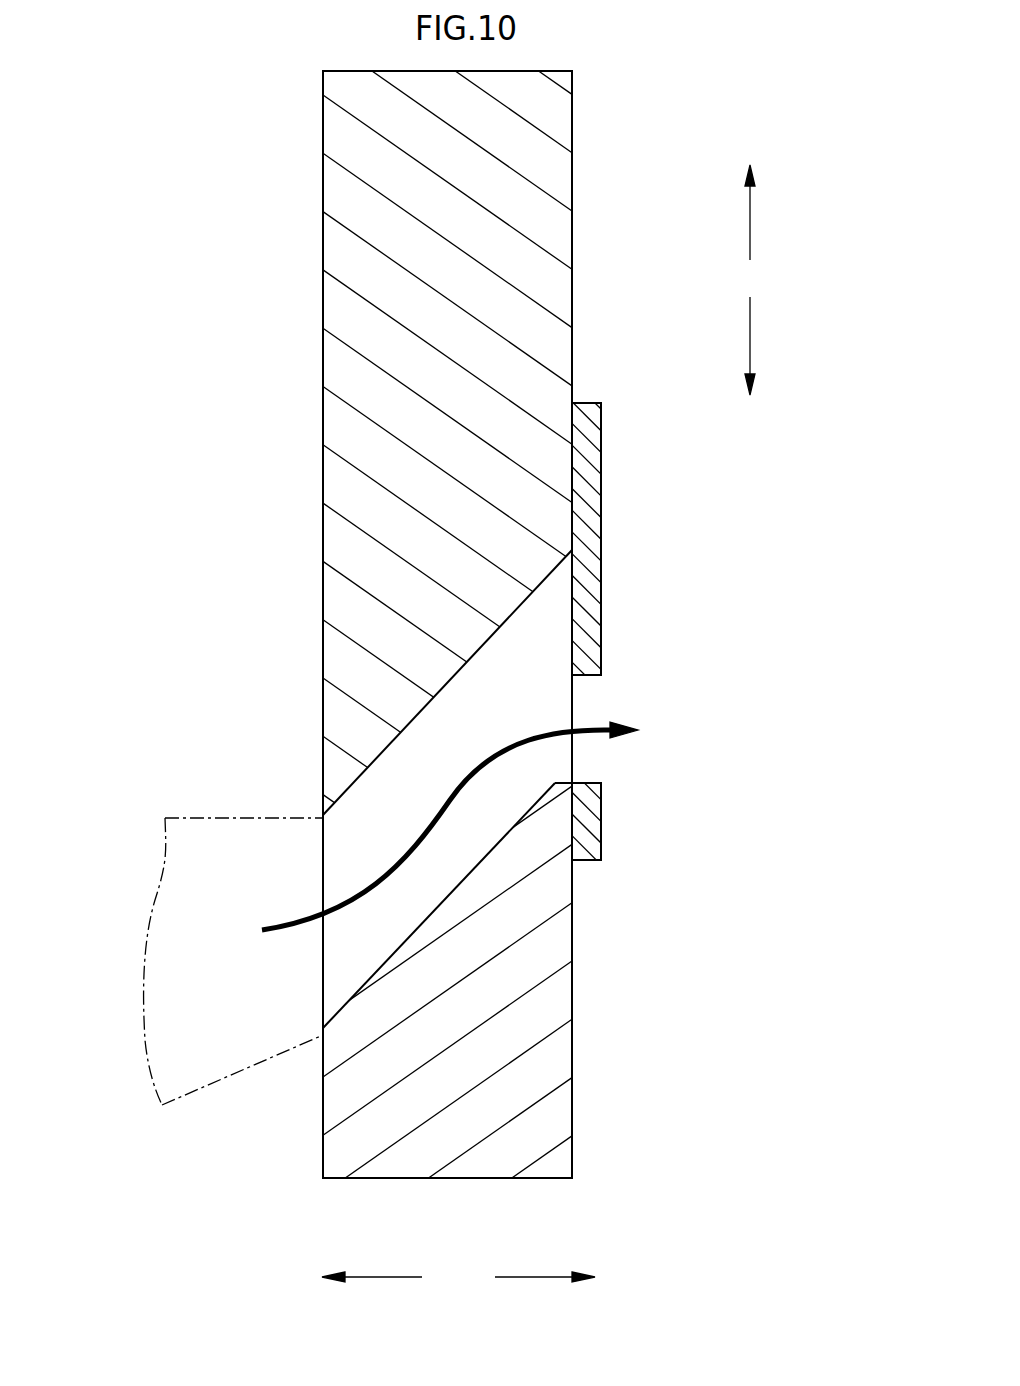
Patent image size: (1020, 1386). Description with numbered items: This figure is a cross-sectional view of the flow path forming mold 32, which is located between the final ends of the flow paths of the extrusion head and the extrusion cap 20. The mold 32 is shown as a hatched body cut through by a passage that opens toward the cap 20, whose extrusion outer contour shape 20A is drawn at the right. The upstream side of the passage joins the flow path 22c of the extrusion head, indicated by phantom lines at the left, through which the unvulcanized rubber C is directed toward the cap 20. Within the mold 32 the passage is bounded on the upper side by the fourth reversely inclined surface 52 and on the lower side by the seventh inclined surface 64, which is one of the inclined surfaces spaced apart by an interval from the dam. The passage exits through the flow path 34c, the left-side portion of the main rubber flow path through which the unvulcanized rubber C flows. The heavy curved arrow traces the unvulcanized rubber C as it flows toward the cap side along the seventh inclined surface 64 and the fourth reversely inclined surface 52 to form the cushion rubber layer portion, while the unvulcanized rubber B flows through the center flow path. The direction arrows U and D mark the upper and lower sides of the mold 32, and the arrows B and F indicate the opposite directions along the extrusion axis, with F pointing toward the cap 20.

The flow path forming mold 32 is at (450, 1178).
The fourth reversely inclined surface 52 is at (423, 712).
The seventh inclined surface 64 is at (355, 993).
The extrusion cap 20 is at (604, 575).
The extrusion outer contour shape 20A is at (583, 783).
The flow path 34c is at (535, 684).
The flow path 22c is at (188, 1092).
The unvulcanized rubber C is at (427, 827).
The arrow U direction U is at (750, 218).
The arrow D direction D is at (750, 342).
The unvulcanized rubber B is at (375, 1277).
The forward direction F is at (532, 1277).